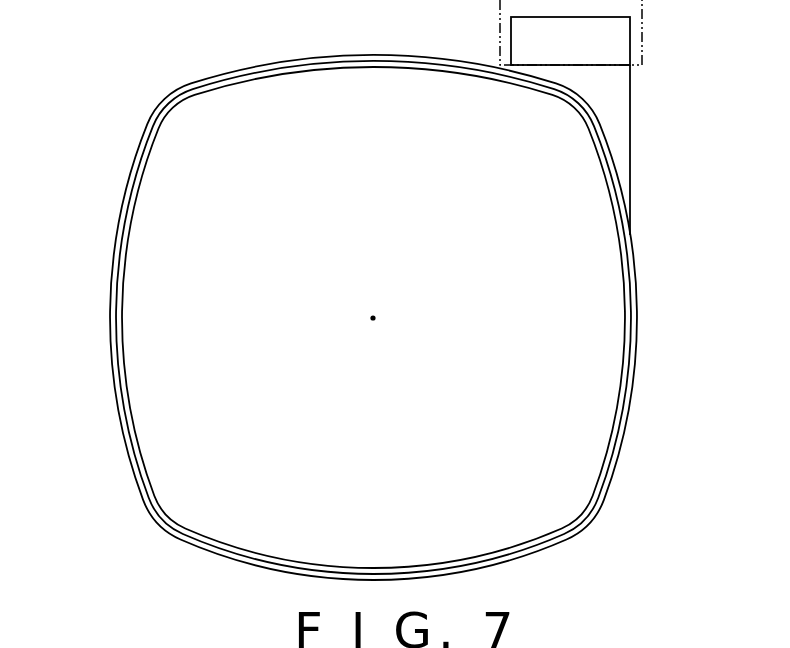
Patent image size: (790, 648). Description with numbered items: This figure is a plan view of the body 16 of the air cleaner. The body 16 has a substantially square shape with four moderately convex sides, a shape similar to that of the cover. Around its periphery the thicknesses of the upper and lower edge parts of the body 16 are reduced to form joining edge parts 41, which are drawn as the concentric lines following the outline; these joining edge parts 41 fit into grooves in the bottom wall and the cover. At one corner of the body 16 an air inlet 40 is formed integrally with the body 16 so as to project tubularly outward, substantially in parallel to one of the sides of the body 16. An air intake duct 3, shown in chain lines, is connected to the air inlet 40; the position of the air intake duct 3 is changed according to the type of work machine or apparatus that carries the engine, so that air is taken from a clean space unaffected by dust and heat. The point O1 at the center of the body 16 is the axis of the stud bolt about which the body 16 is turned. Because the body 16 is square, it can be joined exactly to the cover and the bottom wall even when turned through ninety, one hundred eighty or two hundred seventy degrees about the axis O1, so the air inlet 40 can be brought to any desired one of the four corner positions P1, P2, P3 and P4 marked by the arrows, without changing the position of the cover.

The body 16 is at (110, 312).
The joining edge part 41 is at (122, 339).
The air inlet 40 is at (511, 42).
The air intake duct 3 is at (642, 33).
The axis of the stud bolt O1 is at (372, 317).
The position P1 is at (591, 108).
The position P2 is at (161, 105).
The position P3 is at (162, 531).
The position P4 is at (587, 523).